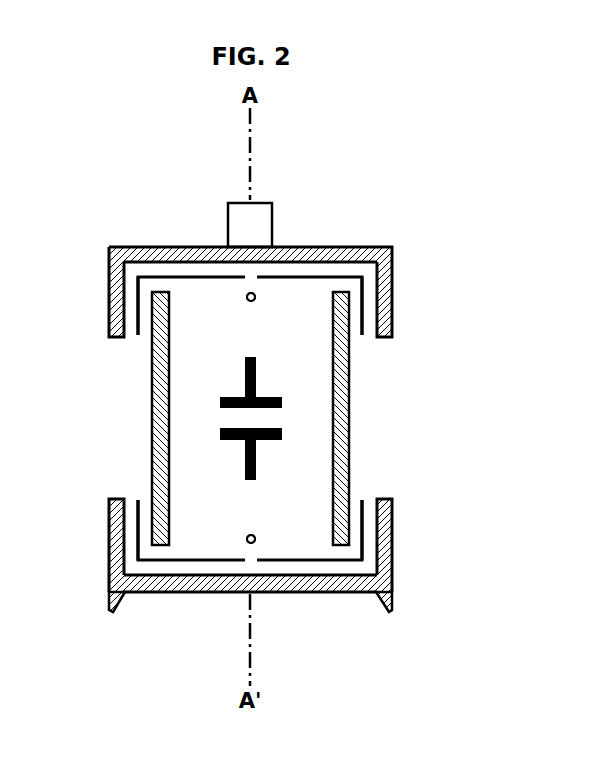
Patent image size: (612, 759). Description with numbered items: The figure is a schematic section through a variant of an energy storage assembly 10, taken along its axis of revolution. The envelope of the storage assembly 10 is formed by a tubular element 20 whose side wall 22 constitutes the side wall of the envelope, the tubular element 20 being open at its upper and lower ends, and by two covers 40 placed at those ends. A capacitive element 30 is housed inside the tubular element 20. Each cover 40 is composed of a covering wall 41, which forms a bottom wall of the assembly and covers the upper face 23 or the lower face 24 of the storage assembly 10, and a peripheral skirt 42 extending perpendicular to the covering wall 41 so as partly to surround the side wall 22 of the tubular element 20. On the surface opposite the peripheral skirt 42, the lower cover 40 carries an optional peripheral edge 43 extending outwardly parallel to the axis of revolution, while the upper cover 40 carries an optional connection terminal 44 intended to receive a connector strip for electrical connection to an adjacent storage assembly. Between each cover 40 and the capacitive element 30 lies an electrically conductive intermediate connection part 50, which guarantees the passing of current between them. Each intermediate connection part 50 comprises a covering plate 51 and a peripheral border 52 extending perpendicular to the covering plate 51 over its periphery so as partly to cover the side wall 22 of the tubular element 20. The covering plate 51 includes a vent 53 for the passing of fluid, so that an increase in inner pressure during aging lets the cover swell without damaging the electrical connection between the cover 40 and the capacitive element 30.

The storage assembly 10 is at (498, 268).
The tubular element 20 is at (356, 407).
The side wall 22 is at (152, 412).
The upper face 23 is at (255, 298).
The lower face 24 is at (256, 540).
The capacitive element 30 is at (257, 373).
The cover 40 is at (260, 419).
The covering wall 41 is at (177, 256).
The peripheral skirt 42 is at (384, 292).
The peripheral edge 43 is at (108, 600).
The connection terminal 44 is at (262, 221).
The intermediate connection part 50 is at (362, 347).
The covering plate 51 is at (207, 280).
The peripheral border 52 is at (133, 326).
The vent 53 is at (247, 300).